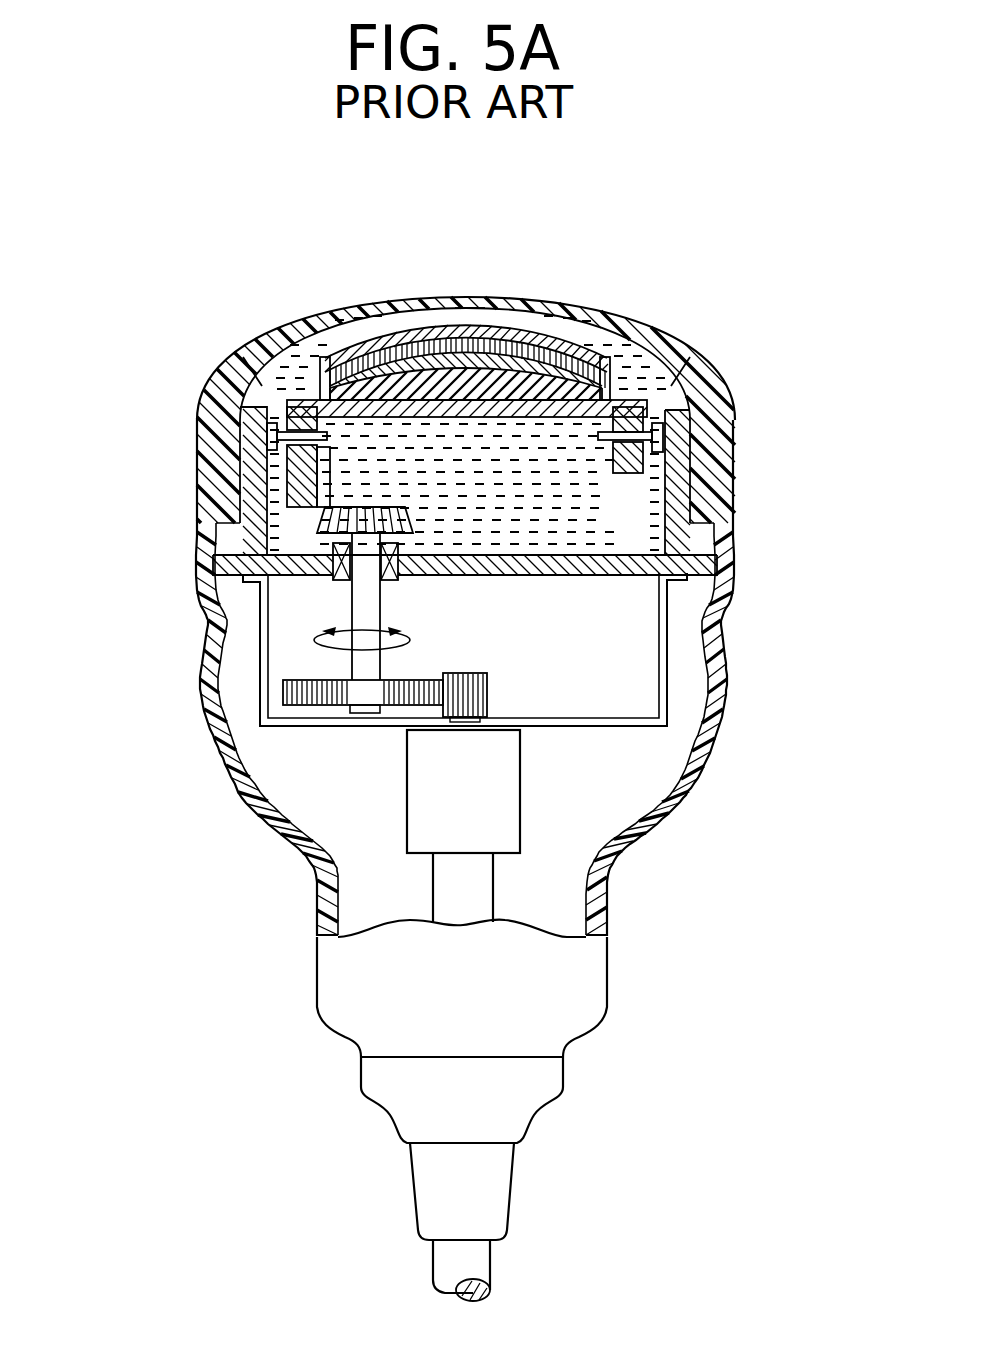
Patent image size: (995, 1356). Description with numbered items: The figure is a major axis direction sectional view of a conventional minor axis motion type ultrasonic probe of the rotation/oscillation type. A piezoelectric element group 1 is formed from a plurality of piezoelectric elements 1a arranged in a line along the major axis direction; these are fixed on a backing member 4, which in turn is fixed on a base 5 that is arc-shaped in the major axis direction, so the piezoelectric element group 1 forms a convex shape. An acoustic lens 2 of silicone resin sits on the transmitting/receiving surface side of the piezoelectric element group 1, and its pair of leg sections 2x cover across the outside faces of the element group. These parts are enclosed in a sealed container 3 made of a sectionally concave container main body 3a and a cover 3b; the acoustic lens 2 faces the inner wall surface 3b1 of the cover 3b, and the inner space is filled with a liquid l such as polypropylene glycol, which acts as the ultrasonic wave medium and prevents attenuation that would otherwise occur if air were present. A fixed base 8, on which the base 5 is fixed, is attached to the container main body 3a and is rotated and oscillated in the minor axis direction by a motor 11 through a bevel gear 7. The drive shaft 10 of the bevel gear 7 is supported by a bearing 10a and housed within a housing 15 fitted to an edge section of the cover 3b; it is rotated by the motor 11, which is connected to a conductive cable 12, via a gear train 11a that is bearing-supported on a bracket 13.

The piezoelectric element group 1 is at (393, 335).
The piezoelectric elements 1a is at (297, 335).
The acoustic lens 2 is at (527, 307).
The leg sections 2x is at (243, 357).
The sealed container 3 is at (736, 404).
The container main body 3a is at (600, 580).
The cover 3b is at (720, 458).
The inner wall surface 3b1 is at (470, 310).
The backing member 4 is at (560, 330).
The base 5 is at (578, 355).
The bevel gear 7 is at (340, 495).
The fixed base 8 is at (467, 420).
The drive shaft 10 is at (380, 600).
The bearing 10a is at (330, 572).
The motor 11 is at (300, 398).
The gear train 11a is at (393, 703).
The conductive cable 12 is at (477, 1265).
The bracket 13 is at (630, 733).
The housing 15 is at (710, 727).
The liquid l is at (692, 372).